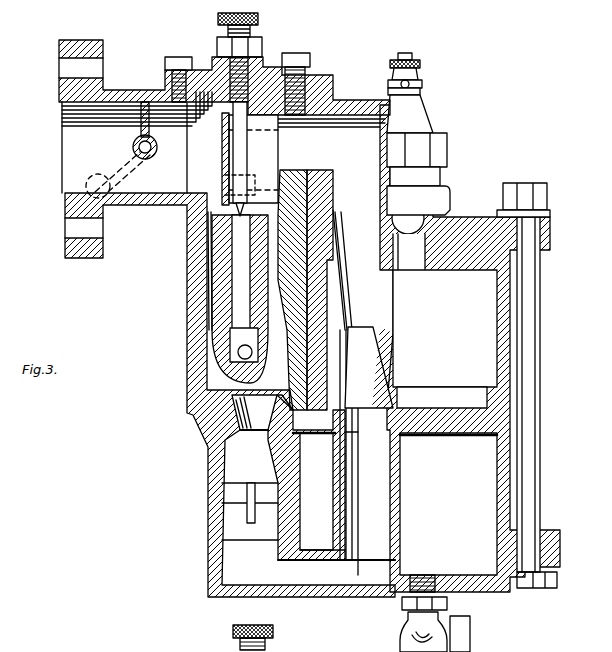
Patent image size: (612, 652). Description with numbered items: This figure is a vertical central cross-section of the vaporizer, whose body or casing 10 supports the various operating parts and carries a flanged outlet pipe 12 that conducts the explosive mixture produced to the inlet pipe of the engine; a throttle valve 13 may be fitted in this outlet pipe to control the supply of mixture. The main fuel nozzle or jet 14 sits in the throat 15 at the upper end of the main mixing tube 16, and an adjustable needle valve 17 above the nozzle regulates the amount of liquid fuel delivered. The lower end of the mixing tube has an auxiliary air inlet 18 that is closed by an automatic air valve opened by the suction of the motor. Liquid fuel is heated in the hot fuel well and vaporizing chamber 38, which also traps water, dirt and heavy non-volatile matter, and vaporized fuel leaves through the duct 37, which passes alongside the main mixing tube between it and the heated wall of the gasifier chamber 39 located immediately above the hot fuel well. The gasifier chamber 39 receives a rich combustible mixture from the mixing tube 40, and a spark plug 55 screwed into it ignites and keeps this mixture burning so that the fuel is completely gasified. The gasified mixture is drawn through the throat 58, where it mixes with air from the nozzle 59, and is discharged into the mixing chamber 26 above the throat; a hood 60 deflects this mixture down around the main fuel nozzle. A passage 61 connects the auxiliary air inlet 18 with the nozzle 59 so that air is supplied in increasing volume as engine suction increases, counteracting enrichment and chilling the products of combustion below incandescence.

The body or casing 10 is at (505, 303).
The flanged outlet pipe 12 is at (72, 173).
The throttle valve 13 is at (135, 133).
The main fuel nozzle or jet 14 is at (225, 250).
The throat 15 is at (247, 206).
The main mixing tube 16 is at (195, 300).
The adjustable needle valve 17 is at (250, 28).
The auxiliary air inlet 18 is at (249, 510).
The mixing chamber 26 is at (178, 106).
The duct 37 is at (290, 381).
The hot fuel well and vaporizing chamber 38 is at (448, 504).
The combustion and heat exchange or gasifier chamber 39 is at (445, 339).
The mixing tube 40 is at (417, 245).
The spark plug 55 is at (413, 118).
The throat 58 is at (352, 392).
The nozzle 59 is at (378, 383).
The hood 60 is at (269, 128).
The passage 61 is at (336, 565).